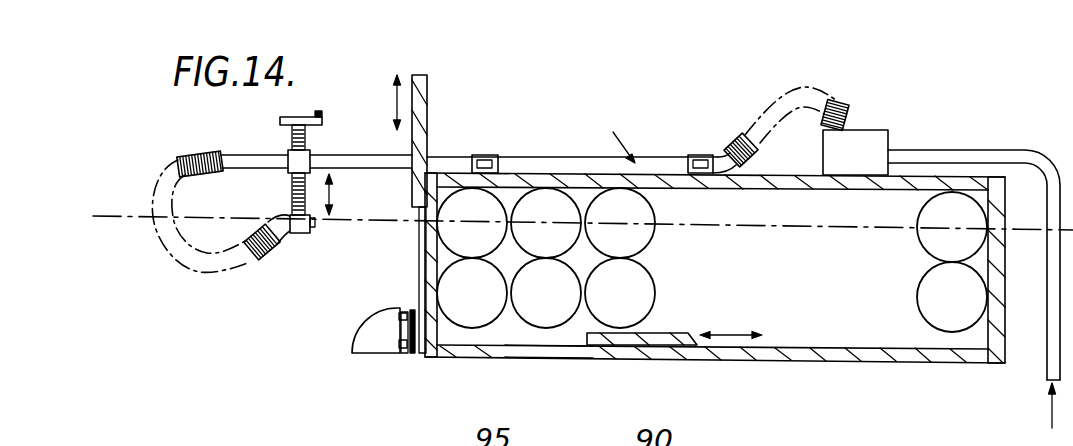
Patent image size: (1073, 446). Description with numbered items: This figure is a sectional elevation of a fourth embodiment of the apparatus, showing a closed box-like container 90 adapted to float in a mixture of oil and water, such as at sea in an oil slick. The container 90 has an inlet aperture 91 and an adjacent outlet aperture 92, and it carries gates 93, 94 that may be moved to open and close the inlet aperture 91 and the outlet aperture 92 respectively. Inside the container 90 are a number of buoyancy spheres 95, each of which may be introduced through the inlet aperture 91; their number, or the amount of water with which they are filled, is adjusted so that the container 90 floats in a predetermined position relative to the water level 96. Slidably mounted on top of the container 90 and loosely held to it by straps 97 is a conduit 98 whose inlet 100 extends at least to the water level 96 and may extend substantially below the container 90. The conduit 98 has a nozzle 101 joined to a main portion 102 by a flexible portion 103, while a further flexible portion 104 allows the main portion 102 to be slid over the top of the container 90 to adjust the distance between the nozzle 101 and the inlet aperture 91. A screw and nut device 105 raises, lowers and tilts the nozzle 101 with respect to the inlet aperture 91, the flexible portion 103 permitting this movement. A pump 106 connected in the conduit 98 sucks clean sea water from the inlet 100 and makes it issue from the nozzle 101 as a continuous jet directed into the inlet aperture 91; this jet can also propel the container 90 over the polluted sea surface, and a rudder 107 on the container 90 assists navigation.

The container 90 is at (753, 356).
The inlet aperture 91 is at (425, 255).
The outlet aperture 92 is at (567, 352).
The gate 93 is at (396, 104).
The gate 94 is at (673, 332).
The buoyancy spheres 95 is at (472, 318).
The water level 96 is at (781, 228).
The straps 97 is at (485, 156).
The conduit 98 is at (605, 137).
The inlet 100 is at (1042, 371).
The nozzle 101 is at (311, 230).
The main portion 102 is at (567, 163).
The flexible portion 103 is at (203, 267).
The flexible portion 104 is at (848, 101).
The screw and nut device 105 is at (280, 118).
The pump 106 is at (887, 138).
The rudder 107 is at (383, 325).